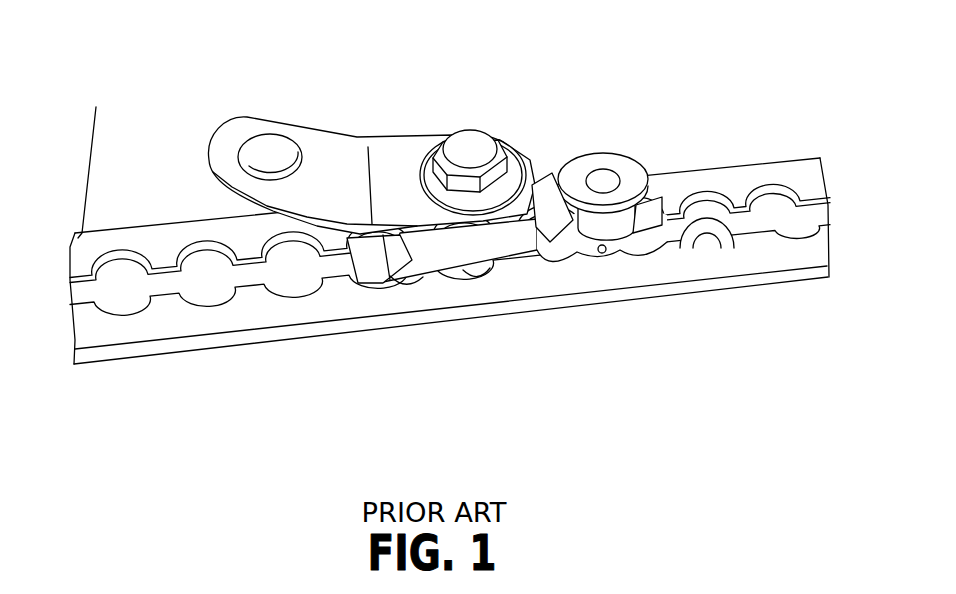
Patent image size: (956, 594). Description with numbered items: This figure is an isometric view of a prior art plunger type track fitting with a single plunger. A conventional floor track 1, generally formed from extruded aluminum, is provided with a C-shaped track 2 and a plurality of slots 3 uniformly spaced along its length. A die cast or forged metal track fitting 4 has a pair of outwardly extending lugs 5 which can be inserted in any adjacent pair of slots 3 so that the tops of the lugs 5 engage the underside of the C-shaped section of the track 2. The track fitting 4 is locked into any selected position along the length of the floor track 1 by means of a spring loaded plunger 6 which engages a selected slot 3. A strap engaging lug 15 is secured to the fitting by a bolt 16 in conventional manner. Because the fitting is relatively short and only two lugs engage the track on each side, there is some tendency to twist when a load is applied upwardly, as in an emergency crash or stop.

The floor track 1 is at (214, 317).
The C-shaped track 2 is at (91, 157).
The slots 3 is at (197, 240).
The track fitting 4 is at (520, 250).
The lugs 5 is at (483, 277).
The spring loaded plunger 6 is at (604, 175).
The strap engaging lug 15 is at (323, 145).
The bolt 16 is at (469, 150).